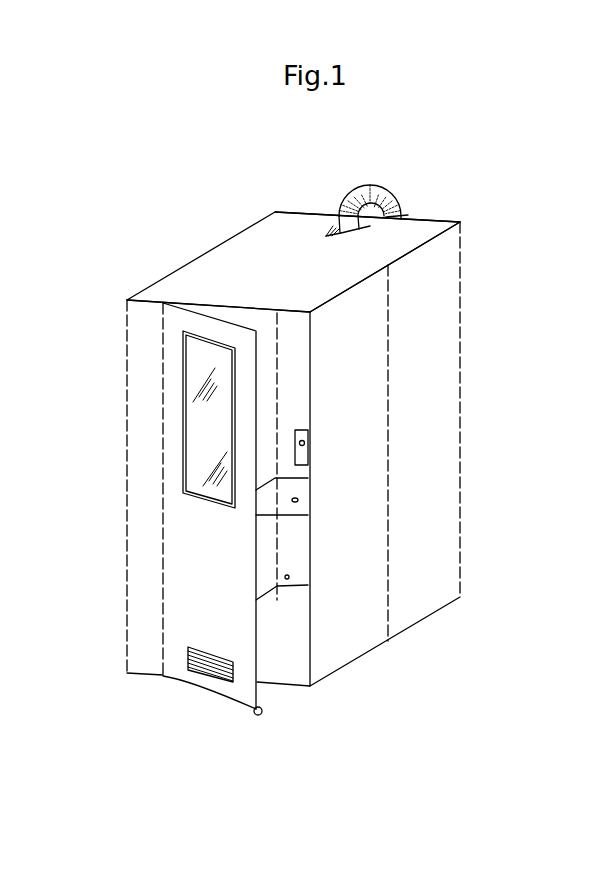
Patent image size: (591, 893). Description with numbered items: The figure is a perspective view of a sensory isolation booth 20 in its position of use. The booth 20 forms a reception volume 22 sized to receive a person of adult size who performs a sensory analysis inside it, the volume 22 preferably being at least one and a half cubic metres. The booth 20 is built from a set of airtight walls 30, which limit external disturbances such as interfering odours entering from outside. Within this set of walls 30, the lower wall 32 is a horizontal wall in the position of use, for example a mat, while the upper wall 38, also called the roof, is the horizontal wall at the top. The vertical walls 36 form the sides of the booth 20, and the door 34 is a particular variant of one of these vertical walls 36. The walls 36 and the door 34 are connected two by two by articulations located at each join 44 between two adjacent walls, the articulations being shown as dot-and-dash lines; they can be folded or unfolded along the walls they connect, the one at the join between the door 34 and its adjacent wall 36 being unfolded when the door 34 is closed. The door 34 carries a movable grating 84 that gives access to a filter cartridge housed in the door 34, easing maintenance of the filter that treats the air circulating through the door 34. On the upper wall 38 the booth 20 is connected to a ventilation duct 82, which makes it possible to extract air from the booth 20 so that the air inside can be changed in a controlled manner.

The sensory isolation booth 20 is at (468, 162).
The reception volume 22 is at (283, 620).
The walls 30 is at (545, 243).
The lower wall 32 is at (293, 602).
The door 34 is at (372, 376).
The vertical walls 36 is at (297, 358).
The upper wall 38 is at (418, 232).
The join 44 is at (277, 375).
The ventilation duct 82 is at (374, 184).
The movable grating 84 is at (200, 672).